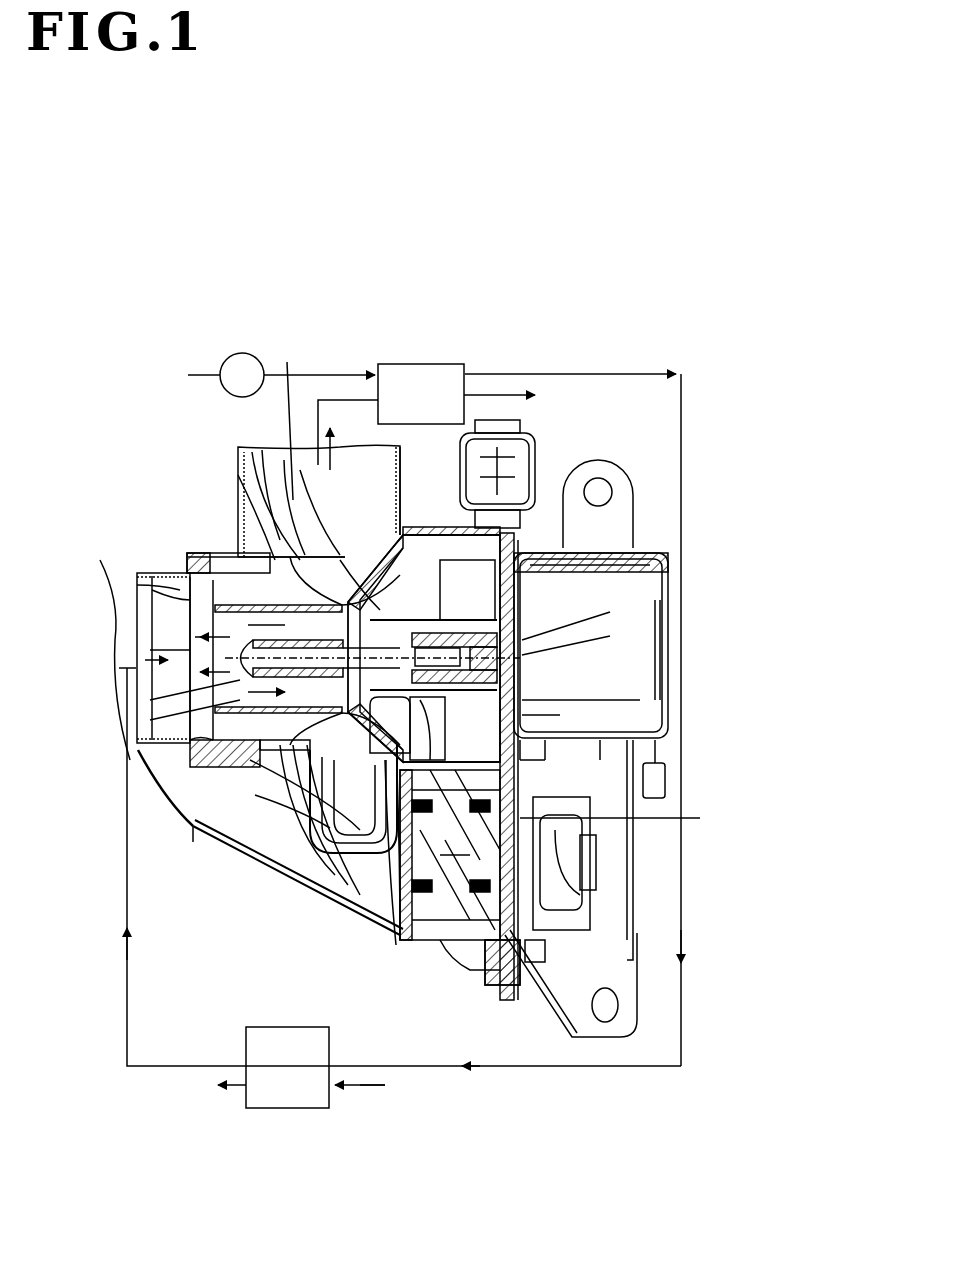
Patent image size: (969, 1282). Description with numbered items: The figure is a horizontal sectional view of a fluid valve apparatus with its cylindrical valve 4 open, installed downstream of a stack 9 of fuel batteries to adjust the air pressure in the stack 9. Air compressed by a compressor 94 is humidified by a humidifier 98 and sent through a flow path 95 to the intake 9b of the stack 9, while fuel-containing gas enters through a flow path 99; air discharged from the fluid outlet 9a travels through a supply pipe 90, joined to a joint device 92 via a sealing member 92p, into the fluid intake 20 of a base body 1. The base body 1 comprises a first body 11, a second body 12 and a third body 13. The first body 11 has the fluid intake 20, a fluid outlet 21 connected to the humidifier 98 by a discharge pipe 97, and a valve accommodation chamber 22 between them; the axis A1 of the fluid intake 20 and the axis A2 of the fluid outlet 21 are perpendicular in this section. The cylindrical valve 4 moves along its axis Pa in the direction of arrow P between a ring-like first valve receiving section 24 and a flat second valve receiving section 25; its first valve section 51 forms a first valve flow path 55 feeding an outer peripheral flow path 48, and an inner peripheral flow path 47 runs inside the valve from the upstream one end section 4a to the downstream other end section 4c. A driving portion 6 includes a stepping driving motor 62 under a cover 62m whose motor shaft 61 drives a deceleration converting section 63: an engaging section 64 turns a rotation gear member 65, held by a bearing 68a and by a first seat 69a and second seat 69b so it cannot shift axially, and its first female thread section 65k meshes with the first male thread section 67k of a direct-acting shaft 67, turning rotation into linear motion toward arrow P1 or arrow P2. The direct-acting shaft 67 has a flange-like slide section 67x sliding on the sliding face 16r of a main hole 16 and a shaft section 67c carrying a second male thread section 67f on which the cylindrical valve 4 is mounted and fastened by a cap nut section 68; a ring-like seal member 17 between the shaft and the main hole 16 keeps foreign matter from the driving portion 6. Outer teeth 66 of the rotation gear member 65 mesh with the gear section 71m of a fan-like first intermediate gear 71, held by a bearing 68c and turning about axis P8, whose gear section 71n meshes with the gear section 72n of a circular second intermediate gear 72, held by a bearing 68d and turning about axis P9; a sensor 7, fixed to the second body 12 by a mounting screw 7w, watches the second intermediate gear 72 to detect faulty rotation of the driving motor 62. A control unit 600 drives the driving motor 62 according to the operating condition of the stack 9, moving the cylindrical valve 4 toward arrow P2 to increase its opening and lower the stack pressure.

The base body 1 is at (272, 760).
The cylindrical valve 4 is at (280, 458).
The one end section 4a is at (160, 578).
The other end section 4c is at (353, 799).
The driving portion 6 is at (565, 763).
The sensor 7 is at (590, 925).
The mounting screw 7w is at (548, 958).
The stack 9 is at (283, 1027).
The fluid outlet 9a is at (246, 1065).
The intake 9b is at (329, 1065).
The first body 11 is at (330, 790).
The second body 12 is at (522, 598).
The third body 13 is at (582, 1035).
The main hole 16 is at (404, 742).
The sliding face 16r is at (436, 730).
The seal member 17 is at (390, 725).
The fluid intake 20 is at (148, 590).
The fluid outlet 21 is at (238, 452).
The valve accommodation chamber 22 is at (290, 800).
The first valve receiving section 24 is at (215, 553).
The second valve receiving section 25 is at (372, 780).
The inner peripheral flow path 47 is at (300, 790).
The outer peripheral flow path 48 is at (262, 455).
The first valve section 51 is at (190, 722).
The first valve flow path 55 is at (238, 478).
The motor shaft 61 is at (480, 660).
The driving motor 62 is at (668, 580).
The cover 62m is at (660, 552).
The deceleration converting section 63 is at (451, 573).
The engaging section 64 is at (662, 640).
The rotation gear member 65 is at (662, 665).
The first female thread section 65k is at (586, 614).
The outer teeth 66 is at (700, 712).
The direct-acting shaft 67 is at (424, 648).
The shaft section 67c is at (365, 625).
The second male thread section 67f is at (310, 820).
The first male thread section 67k is at (586, 634).
The slide section 67x is at (375, 600).
The cap nut section 68 is at (218, 612).
The bearing 68a is at (662, 686).
The bearing 68c is at (395, 900).
The bearing 68d is at (445, 960).
The first seat 69a is at (388, 560).
The second seat 69b is at (460, 520).
The first intermediate gear 71 is at (395, 910).
The gear section 71m is at (522, 720).
The gear section 71n is at (400, 930).
The second intermediate gear 72 is at (430, 960).
The gear section 72n is at (462, 985).
The supply pipe 90 is at (127, 775).
The joint device 92 is at (185, 571).
The sealing member 92p is at (212, 553).
The compressor 94 is at (235, 366).
The flow path 95 is at (634, 374).
The discharge pipe 97 is at (297, 500).
The humidifier 98 is at (446, 365).
The flow path 99 is at (365, 1088).
The control unit 600 is at (665, 788).
The axis of the fluid intake A1 is at (145, 690).
The axis of the fluid outlet A2 is at (278, 418).
The arrow P is at (150, 642).
The arrow P1 is at (148, 650).
The arrow P2 is at (191, 696).
The axis P8 is at (627, 817).
The axis P9 is at (634, 905).
The axis of the cylindrical valve Pa is at (150, 722).